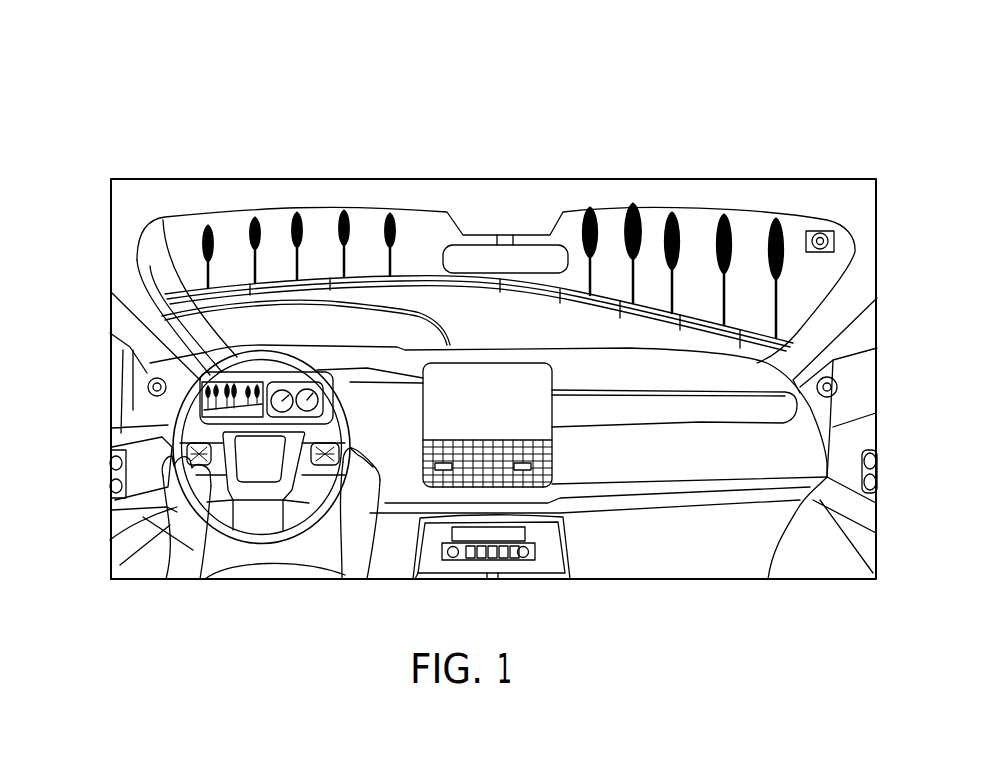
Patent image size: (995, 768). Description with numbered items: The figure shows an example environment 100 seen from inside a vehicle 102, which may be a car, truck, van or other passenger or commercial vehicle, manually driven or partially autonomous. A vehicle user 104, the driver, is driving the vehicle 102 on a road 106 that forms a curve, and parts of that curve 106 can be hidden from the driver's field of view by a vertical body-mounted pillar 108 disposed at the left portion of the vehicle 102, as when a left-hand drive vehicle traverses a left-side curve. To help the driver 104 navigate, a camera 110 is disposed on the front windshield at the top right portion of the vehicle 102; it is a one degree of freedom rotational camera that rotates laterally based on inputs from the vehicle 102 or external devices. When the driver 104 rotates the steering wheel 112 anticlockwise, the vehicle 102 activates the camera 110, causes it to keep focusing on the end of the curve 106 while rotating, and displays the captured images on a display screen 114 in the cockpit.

The environment 100 is at (160, 60).
The vehicle 102 is at (515, 195).
The vehicle user 104 is at (160, 533).
The road 106 is at (420, 312).
The vertical body-mounted pillar 108 is at (148, 311).
The camera 110 is at (820, 231).
The steering wheel 112 is at (148, 414).
The display screen 114 is at (232, 388).